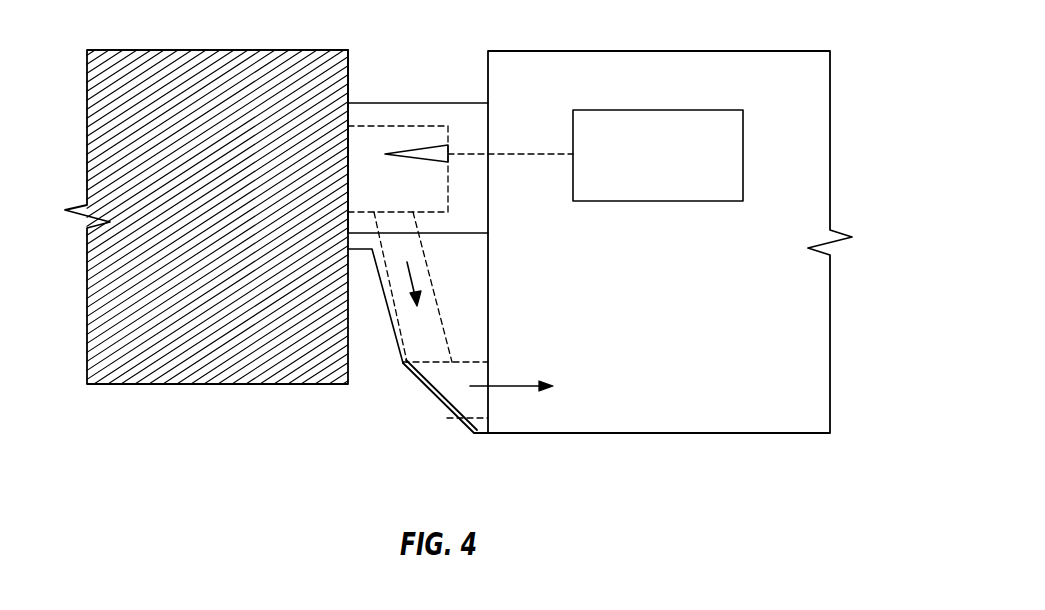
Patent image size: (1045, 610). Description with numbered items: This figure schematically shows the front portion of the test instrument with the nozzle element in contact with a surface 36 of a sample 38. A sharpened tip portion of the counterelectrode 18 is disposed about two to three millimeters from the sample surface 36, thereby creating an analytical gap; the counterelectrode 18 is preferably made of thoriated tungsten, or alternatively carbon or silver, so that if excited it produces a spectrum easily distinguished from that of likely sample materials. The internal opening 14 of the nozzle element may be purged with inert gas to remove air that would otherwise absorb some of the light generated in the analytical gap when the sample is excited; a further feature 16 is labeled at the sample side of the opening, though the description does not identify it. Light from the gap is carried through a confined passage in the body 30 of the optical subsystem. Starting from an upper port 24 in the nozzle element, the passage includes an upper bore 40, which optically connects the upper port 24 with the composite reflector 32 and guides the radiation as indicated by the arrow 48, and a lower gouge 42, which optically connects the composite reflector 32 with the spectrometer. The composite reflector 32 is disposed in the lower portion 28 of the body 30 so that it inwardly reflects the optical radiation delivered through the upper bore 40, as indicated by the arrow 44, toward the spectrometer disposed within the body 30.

The internal opening 14 is at (365, 135).
The sample surface 16 is at (345, 222).
The counterelectrode 18 is at (415, 150).
The upper port 24 is at (392, 224).
The lower portion 28 is at (393, 343).
The body 30 is at (818, 83).
The composite reflector 32 is at (447, 415).
The sample surface 36 is at (348, 63).
The sample 38 is at (232, 348).
The upper bore 40 is at (422, 265).
The lower gouge 42 is at (480, 373).
The arrow 44 is at (522, 387).
The arrow 48 is at (413, 280).